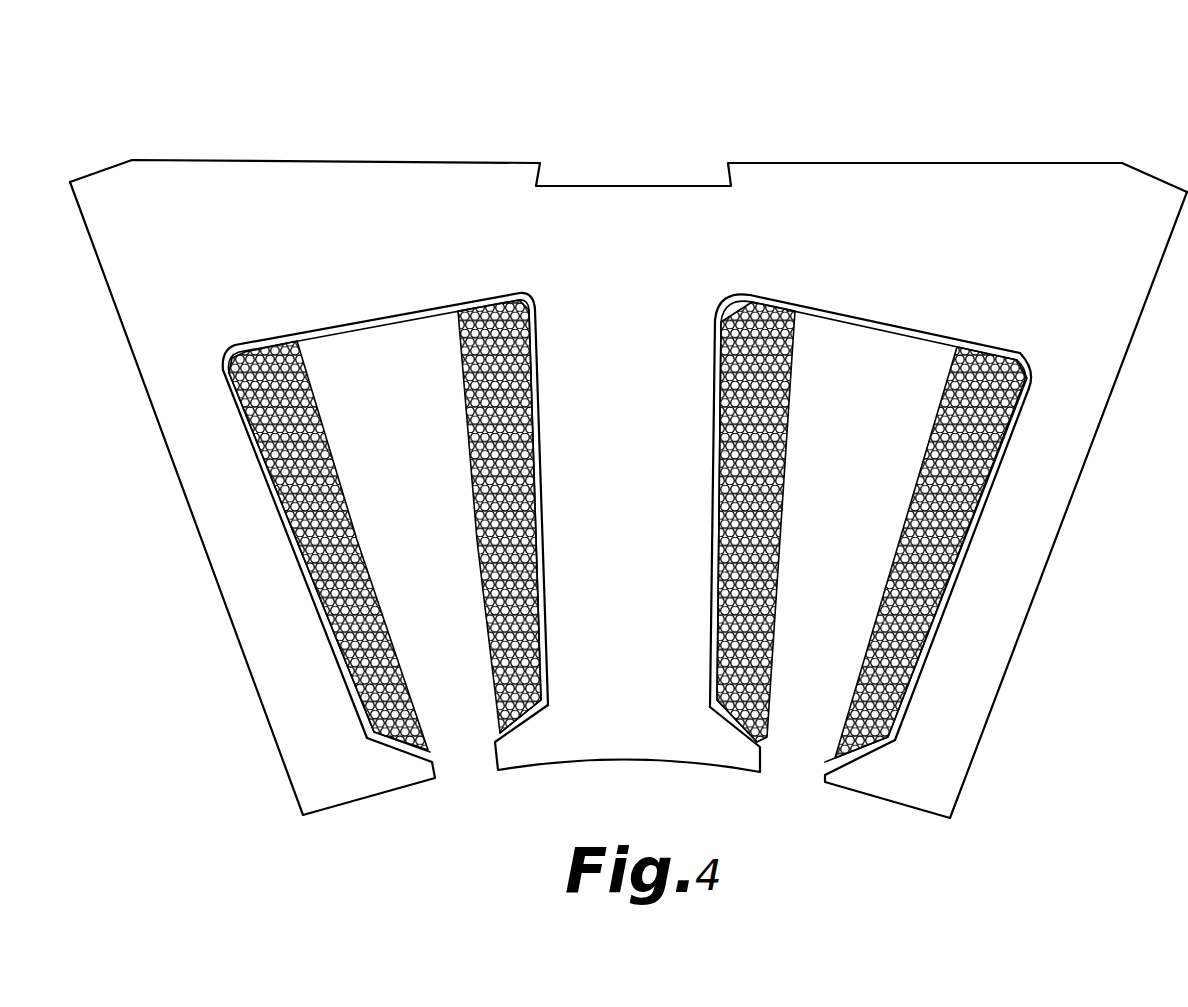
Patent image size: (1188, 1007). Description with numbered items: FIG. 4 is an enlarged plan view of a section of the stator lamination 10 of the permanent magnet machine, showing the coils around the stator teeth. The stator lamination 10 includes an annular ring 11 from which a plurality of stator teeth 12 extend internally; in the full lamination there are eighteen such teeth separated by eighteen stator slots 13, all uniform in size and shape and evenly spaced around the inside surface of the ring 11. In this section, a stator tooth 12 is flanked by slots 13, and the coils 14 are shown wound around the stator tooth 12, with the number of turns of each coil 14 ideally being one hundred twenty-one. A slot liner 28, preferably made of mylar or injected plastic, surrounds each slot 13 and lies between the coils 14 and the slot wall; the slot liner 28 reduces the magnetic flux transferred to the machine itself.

The stator lamination 10 is at (783, 113).
The annular ring 11 is at (240, 250).
The stator teeth 12 is at (247, 511).
The stator slots 13 is at (410, 435).
The coils 14 is at (490, 573).
The slot liner 28 is at (327, 633).